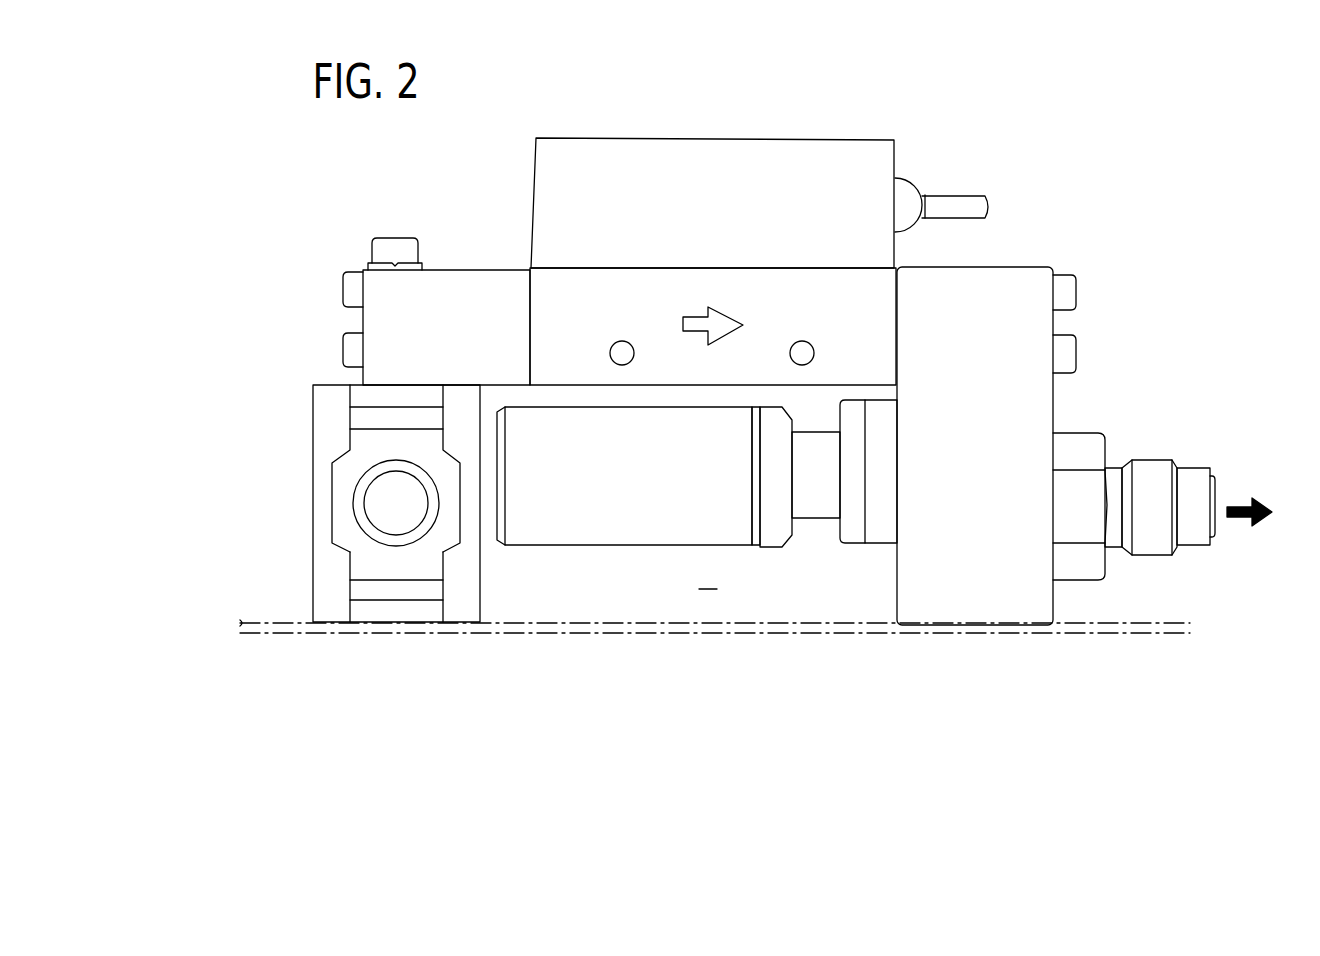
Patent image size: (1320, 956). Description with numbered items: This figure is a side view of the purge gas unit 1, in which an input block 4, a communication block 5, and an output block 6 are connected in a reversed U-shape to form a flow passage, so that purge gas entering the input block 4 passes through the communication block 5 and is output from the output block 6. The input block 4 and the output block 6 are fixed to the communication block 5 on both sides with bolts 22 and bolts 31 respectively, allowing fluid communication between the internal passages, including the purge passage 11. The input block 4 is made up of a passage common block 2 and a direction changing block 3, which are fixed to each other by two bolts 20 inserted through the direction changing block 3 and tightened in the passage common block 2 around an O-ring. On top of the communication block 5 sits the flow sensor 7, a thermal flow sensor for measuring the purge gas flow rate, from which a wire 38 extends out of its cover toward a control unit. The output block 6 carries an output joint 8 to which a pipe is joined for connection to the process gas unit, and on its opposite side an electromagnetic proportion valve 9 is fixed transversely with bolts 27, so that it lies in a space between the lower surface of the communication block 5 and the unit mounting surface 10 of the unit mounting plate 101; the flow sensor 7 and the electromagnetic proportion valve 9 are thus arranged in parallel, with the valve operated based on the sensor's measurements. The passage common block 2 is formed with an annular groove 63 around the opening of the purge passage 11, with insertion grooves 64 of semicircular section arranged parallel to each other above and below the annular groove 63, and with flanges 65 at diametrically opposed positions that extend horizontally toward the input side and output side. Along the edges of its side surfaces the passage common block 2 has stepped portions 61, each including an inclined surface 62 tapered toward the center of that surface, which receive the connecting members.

The purge gas unit 1 is at (1073, 190).
The passage common block 2 is at (303, 410).
The direction changing block 3 is at (373, 371).
The input block 4 is at (220, 360).
The communication block 5 is at (563, 282).
The output block 6 is at (1015, 268).
The flow sensor 7 is at (800, 146).
The output joint 8 is at (1143, 463).
The electromagnetic proportion valve 9 is at (632, 527).
The unit mounting surface 10 is at (697, 623).
The purge passage 11 is at (382, 516).
The bolts 20 is at (396, 247).
The bolts 22 is at (343, 290).
The bolts 27 is at (855, 423).
The bolts 31 is at (1075, 291).
The wire 38 is at (948, 198).
The stepped portions 61 is at (347, 572).
The inclined surface 62 is at (320, 545).
The annular groove 63 is at (355, 500).
The insertion grooves 64 is at (360, 417).
The flanges 65 is at (340, 473).
The unit mounting plate 101 is at (290, 632).